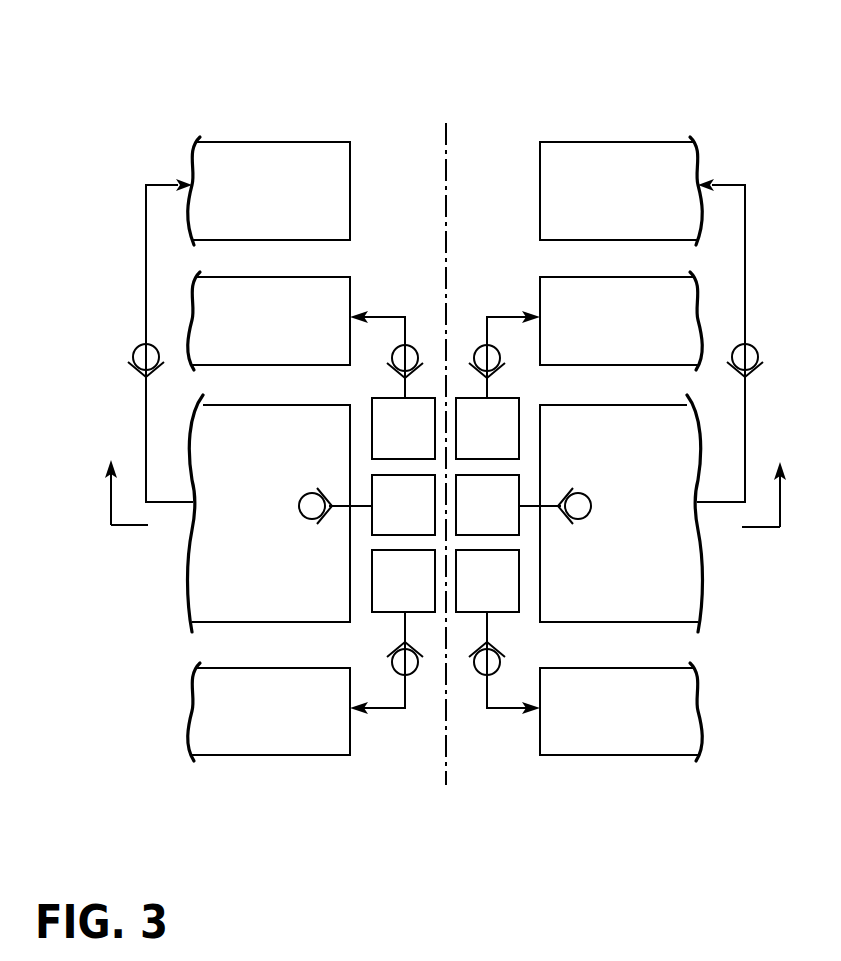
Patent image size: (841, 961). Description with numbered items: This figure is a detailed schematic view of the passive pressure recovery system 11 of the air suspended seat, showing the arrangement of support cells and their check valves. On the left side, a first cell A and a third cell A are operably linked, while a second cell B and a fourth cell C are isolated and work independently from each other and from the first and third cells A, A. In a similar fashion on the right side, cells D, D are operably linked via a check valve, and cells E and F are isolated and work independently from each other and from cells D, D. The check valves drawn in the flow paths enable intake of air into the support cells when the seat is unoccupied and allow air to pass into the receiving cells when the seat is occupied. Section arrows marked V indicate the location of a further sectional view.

The passive pressure recovery system 11 is at (676, 79).
The first cell and third cell A is at (269, 384).
The second cell B is at (269, 321).
The fourth cell C is at (269, 712).
The cells D is at (621, 384).
The cell E is at (621, 321).
The cell F is at (621, 712).
The section line V- V is at (445, 487).